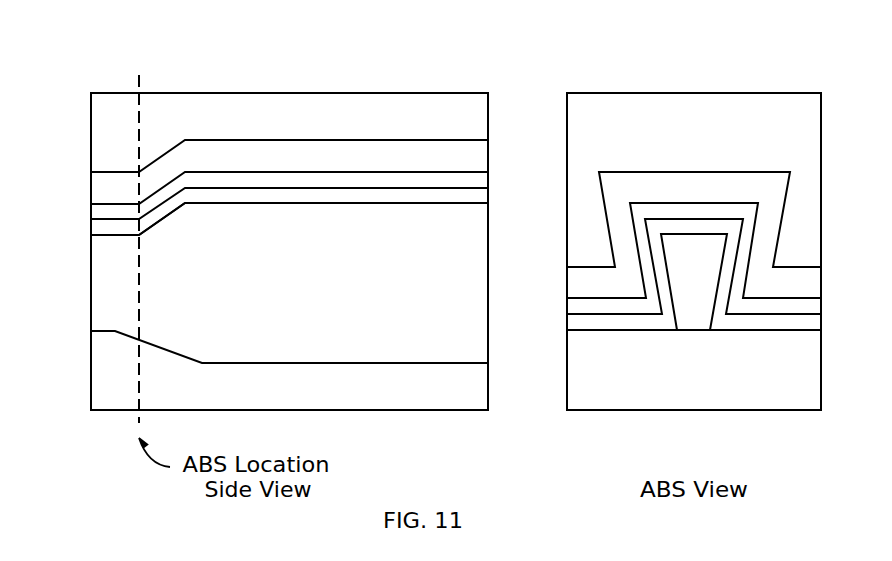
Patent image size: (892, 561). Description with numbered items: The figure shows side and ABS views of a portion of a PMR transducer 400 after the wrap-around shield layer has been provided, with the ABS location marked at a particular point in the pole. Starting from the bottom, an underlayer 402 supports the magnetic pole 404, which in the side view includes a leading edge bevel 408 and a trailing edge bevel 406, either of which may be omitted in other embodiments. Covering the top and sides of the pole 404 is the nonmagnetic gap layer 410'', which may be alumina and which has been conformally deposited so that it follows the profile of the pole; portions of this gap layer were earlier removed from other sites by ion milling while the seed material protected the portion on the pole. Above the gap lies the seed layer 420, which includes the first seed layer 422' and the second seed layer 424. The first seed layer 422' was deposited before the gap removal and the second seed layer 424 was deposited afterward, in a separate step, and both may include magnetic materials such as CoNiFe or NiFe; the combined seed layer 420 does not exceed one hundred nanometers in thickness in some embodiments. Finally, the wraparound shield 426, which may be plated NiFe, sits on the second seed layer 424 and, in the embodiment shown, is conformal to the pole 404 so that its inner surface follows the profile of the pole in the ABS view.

The PMR transducer 400 is at (405, 40).
The underlayer 402 is at (567, 380).
The pole 404 is at (640, 278).
The trailing edge bevel 406 is at (167, 232).
The leading edge bevel 408 is at (123, 345).
The gap layer 410'' is at (427, 340).
The seed layer 420 is at (75, 172).
The first seed layer 422' is at (456, 246).
The second seed layer 424 is at (599, 188).
The wraparound shield 426 is at (91, 144).